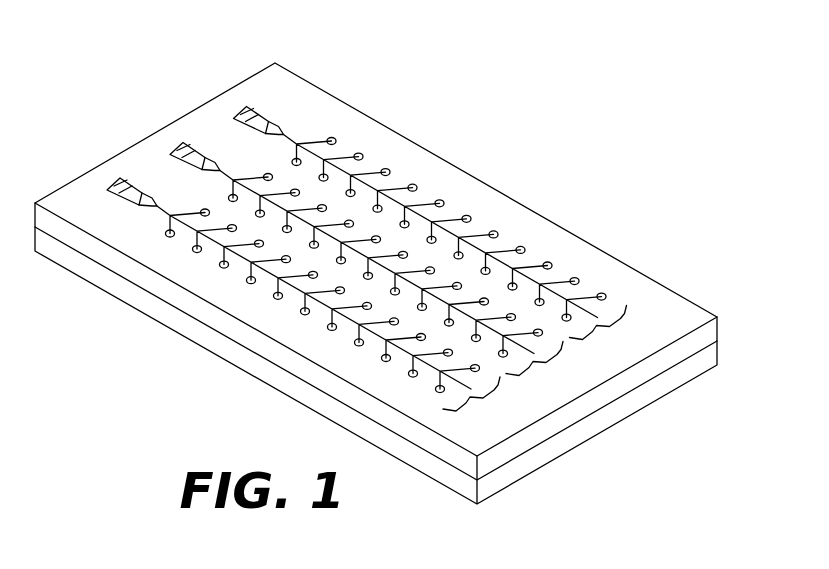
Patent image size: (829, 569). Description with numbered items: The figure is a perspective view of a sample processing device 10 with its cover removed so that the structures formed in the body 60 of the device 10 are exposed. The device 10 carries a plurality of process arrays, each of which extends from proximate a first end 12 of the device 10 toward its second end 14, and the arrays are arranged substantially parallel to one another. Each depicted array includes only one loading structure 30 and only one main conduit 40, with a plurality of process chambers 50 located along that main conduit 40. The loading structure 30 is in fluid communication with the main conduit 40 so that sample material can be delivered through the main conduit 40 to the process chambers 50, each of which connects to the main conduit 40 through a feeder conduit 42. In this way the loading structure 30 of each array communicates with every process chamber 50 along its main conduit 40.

The sample processing device 10 is at (373, 257).
The first end 12 is at (254, 75).
The second end 14 is at (614, 381).
The loading structure 30 is at (193, 143).
The main conduit 40 is at (222, 175).
The feeder conduit 42 is at (242, 177).
The process chamber 50 is at (228, 198).
The body 60 is at (610, 255).